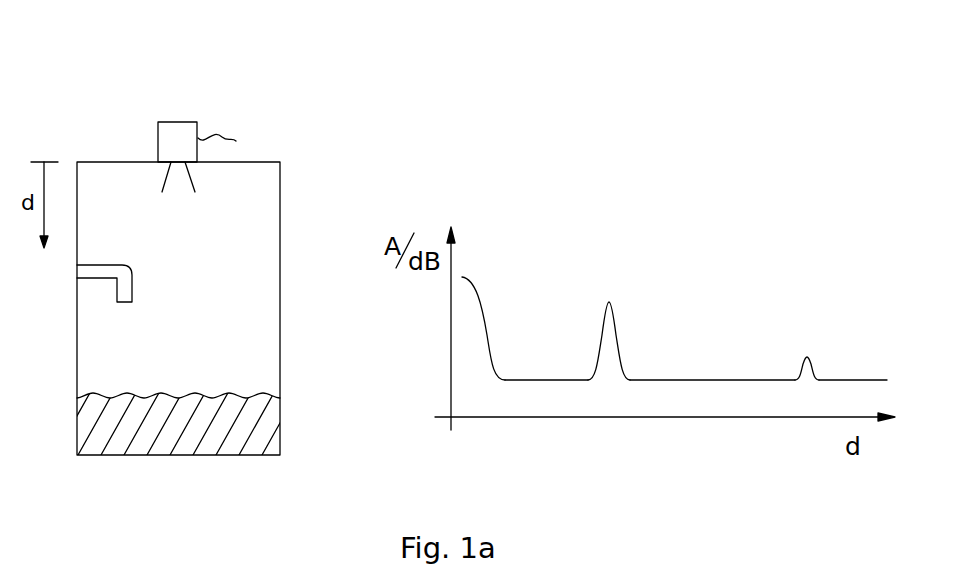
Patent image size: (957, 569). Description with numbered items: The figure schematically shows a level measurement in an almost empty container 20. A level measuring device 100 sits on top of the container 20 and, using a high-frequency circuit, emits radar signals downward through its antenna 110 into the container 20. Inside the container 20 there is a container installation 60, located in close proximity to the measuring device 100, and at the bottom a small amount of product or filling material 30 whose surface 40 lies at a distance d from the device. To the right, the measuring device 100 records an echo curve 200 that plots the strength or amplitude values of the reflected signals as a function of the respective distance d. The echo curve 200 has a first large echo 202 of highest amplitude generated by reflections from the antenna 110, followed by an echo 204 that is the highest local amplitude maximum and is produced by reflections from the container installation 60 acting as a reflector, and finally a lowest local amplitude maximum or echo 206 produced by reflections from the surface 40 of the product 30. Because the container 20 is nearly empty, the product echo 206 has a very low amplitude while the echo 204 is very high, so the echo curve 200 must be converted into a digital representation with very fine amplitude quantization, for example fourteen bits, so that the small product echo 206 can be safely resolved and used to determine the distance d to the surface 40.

The container 20 is at (280, 211).
The product or filling material 30 is at (260, 438).
The surface of the product 40 is at (203, 395).
The container installation 60 is at (123, 308).
The level measuring device 100 is at (181, 122).
The antenna 110 is at (177, 184).
The echo curve 200 is at (686, 285).
The first large echo 202 is at (475, 272).
The echo from container installation 204 is at (610, 295).
The product echo 206 is at (807, 352).